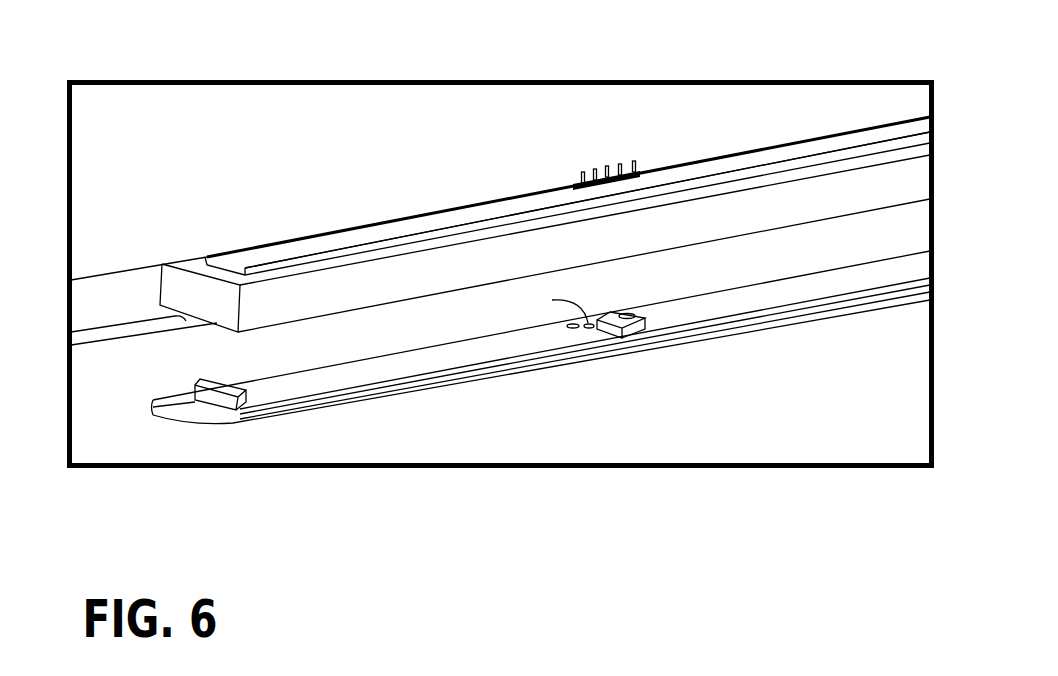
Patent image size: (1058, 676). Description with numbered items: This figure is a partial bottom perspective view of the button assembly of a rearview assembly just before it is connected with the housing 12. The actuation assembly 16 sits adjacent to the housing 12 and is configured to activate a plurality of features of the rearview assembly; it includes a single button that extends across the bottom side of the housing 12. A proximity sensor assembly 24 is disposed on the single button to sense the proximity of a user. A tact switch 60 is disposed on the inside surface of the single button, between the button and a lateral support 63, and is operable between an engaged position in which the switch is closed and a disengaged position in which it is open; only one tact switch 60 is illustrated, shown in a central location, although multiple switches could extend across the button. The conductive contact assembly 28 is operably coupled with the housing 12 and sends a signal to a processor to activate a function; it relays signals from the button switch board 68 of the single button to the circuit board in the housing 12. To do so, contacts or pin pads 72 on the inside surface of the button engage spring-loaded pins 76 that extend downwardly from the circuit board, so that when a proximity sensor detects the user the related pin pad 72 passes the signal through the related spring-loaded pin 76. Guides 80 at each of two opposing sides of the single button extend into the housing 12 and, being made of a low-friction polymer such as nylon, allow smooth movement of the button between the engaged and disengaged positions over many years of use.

The housing 12 is at (103, 345).
The actuation assembly 16 is at (205, 423).
The proximity sensor assembly 24 is at (553, 381).
The conductive contact assembly 28 is at (668, 145).
The tact switch 60 is at (636, 336).
The lateral support 63 is at (873, 190).
The button switch board 68 is at (767, 298).
The pin pads 72 is at (573, 323).
The spring-loaded pins 76 is at (634, 161).
The guides 80 is at (250, 393).